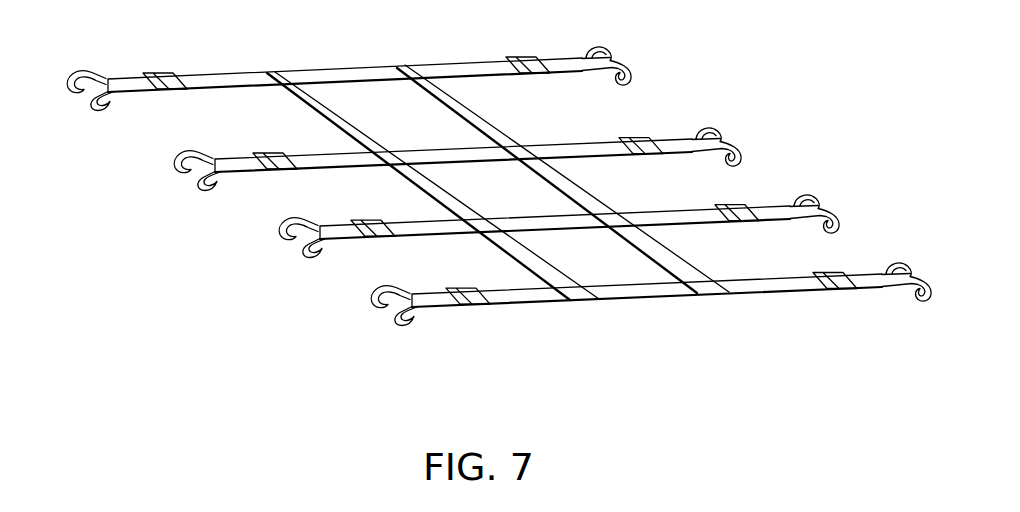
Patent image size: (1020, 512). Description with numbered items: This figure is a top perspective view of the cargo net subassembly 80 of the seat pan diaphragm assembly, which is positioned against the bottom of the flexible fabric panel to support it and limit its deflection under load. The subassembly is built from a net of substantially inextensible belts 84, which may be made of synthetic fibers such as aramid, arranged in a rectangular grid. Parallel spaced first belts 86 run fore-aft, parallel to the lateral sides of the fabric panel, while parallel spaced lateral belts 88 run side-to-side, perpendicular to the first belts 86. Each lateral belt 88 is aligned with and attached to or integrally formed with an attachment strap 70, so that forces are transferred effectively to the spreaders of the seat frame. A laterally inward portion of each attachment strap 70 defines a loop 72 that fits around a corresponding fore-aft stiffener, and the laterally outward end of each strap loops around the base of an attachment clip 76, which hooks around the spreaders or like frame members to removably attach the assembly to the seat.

The attachment strap 70 is at (776, 210).
The loop 72 is at (376, 246).
The attachment clip 76 is at (823, 213).
The cargo net subassembly 80 is at (321, 56).
The belts 84 is at (302, 133).
The first belts 86 is at (464, 109).
The lateral belts 88 is at (552, 301).